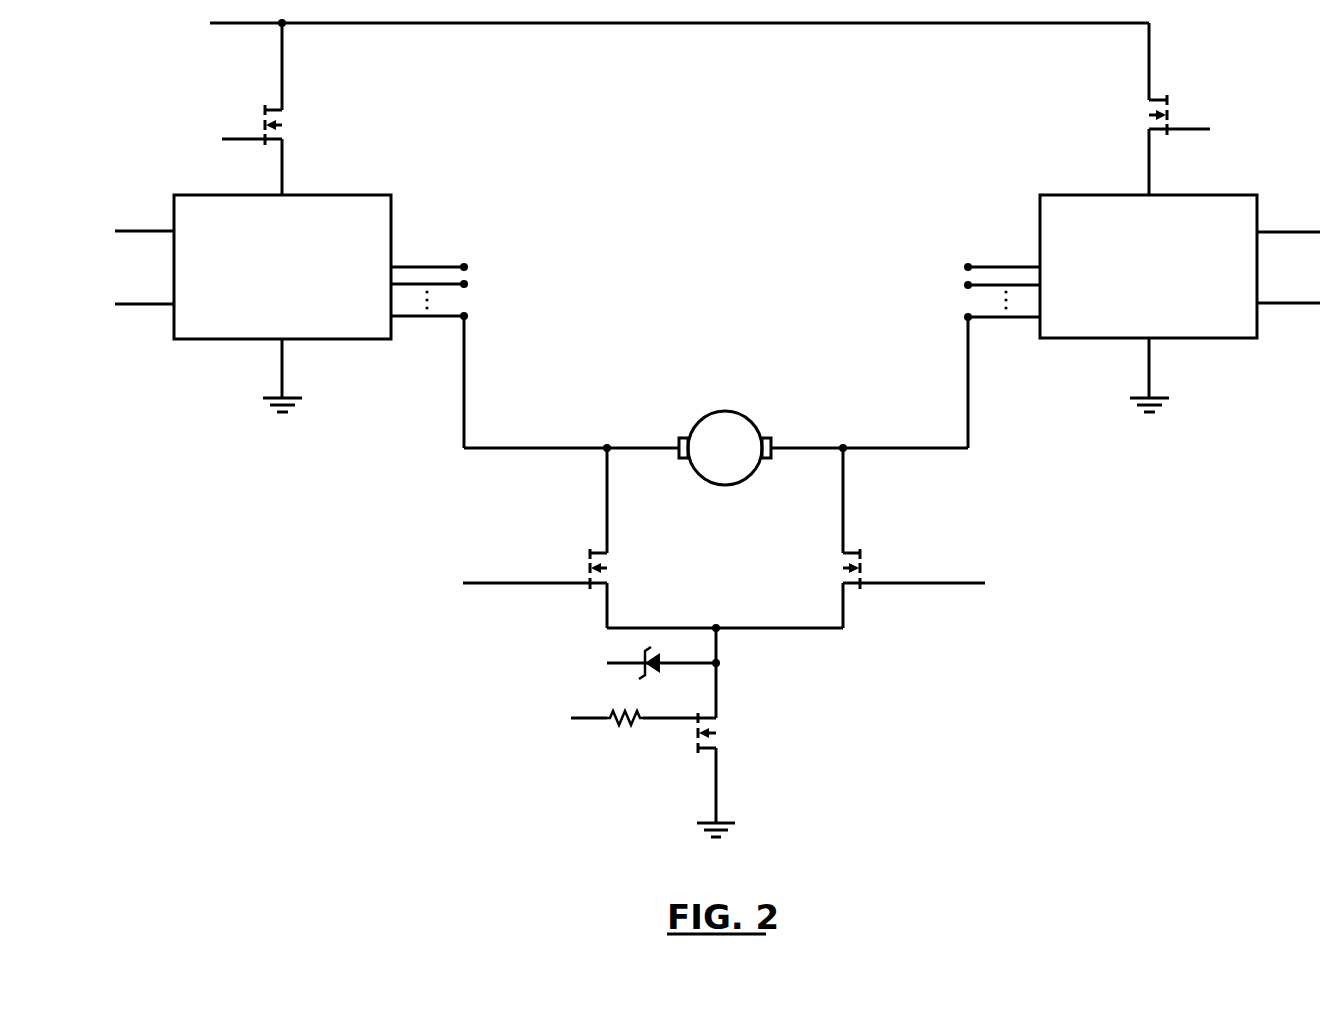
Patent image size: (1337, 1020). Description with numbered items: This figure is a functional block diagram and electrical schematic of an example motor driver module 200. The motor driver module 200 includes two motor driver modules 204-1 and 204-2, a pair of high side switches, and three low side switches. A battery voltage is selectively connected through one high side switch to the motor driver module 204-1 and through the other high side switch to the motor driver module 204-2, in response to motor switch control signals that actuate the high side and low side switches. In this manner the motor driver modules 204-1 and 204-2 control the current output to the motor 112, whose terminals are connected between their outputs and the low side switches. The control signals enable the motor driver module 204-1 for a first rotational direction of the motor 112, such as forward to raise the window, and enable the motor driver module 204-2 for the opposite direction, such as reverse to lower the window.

The motor driver module 200 is at (226, 675).
The motor driver module 204-1 is at (353, 195).
The motor driver module 204-2 is at (1038, 218).
The motor 112 is at (747, 413).